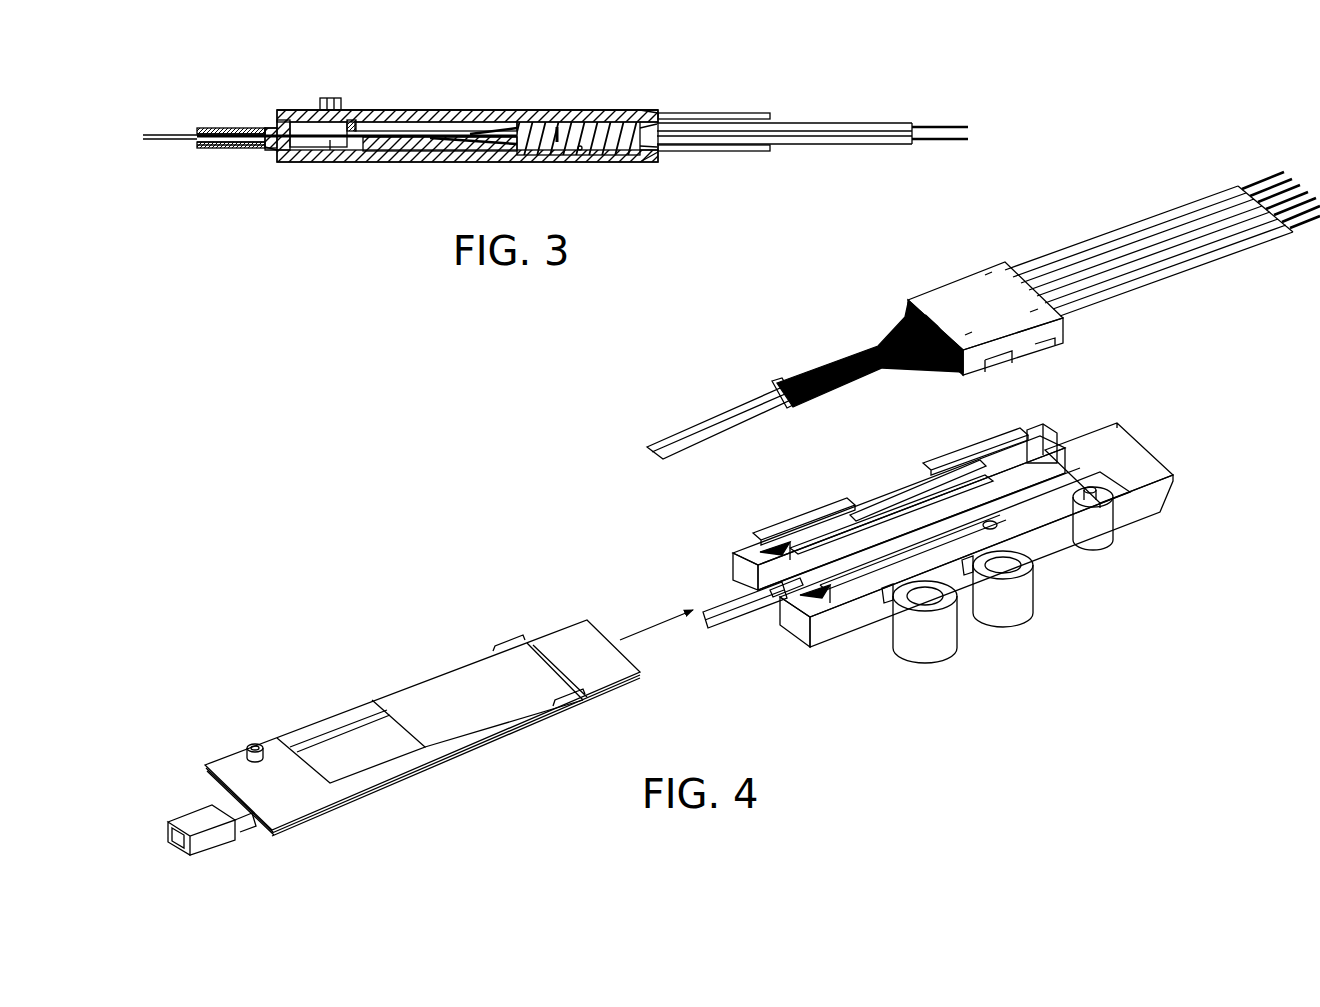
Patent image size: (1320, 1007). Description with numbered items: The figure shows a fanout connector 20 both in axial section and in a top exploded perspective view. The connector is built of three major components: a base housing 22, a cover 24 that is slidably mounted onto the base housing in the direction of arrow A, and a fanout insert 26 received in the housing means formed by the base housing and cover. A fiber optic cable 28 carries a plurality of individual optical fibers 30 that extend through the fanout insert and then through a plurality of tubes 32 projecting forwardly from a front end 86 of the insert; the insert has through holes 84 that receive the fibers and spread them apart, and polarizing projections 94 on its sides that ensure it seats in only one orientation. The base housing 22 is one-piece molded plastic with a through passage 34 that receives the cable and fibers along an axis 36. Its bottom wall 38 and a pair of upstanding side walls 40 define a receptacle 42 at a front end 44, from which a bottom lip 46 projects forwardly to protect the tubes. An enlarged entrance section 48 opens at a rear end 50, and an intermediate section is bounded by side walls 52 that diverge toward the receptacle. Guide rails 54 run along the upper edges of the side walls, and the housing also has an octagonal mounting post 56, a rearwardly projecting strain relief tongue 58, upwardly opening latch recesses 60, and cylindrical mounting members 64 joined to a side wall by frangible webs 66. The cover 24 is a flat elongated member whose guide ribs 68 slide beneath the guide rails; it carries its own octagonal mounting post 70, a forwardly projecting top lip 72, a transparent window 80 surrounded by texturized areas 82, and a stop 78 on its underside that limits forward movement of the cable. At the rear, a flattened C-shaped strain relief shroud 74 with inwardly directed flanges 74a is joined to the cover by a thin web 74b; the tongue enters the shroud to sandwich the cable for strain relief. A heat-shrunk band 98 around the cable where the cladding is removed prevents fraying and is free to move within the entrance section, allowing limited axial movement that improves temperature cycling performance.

In FIG. 3, the fanout connector 20 is at (613, 220).
In FIG. 4, the fanout connector 20 is at (565, 488).
In FIG. 3, the base housing 22 is at (660, 162).
In FIG. 4, the base housing 22 is at (870, 628).
In FIG. 3, the cover 24 is at (660, 112).
In FIG. 4, the cover 24 is at (395, 672).
In FIG. 3, the fanout insert 26 is at (556, 124).
In FIG. 4, the fanout insert 26 is at (908, 300).
In FIG. 3, the fiber optic cable 28 is at (158, 140).
In FIG. 4, the fiber optic cable 28 is at (672, 440).
In FIG. 3, the optical fibers 30 is at (500, 140).
In FIG. 4, the optical fibers 30 is at (1285, 210).
In FIG. 3, the tubes 32 is at (845, 130).
In FIG. 4, the tubes 32 is at (1118, 250).
In FIG. 3, the through passage 34 is at (505, 152).
In FIG. 4, the through passage 34 is at (905, 508).
In FIG. 4, the axis 36 is at (1138, 438).
In FIG. 4, the bottom wall 38 is at (1115, 520).
In FIG. 4, the side walls 40 is at (990, 443).
In FIG. 3, the receptacle 42 is at (568, 155).
In FIG. 4, the receptacle 42 is at (1000, 438).
In FIG. 4, the front end 44 is at (1135, 490).
In FIG. 3, the bottom lip 46 is at (760, 152).
In FIG. 4, the bottom lip 46 is at (1135, 462).
In FIG. 3, the entrance section 48 is at (345, 150).
In FIG. 4, the entrance section 48 is at (778, 600).
In FIG. 4, the rear end 50 is at (740, 575).
In FIG. 3, the side walls 52 is at (405, 125).
In FIG. 4, the side walls 52 is at (880, 505).
In FIG. 4, the guide rails 54 is at (778, 532).
In FIG. 4, the mounting post 56 is at (1118, 508).
In FIG. 3, the strain relief tongue 58 is at (258, 151).
In FIG. 4, the strain relief tongue 58 is at (715, 628).
In FIG. 4, the latch recesses 60 is at (770, 548).
In FIG. 4, the cylindrical mounting members 64 is at (1015, 594).
In FIG. 4, the frangible webs 66 is at (970, 600).
In FIG. 4, the guide ribs 68 is at (210, 768).
In FIG. 3, the mounting post 70 is at (321, 102).
In FIG. 4, the mounting post 70 is at (247, 750).
In FIG. 3, the top lip 72 is at (750, 114).
In FIG. 4, the top lip 72 is at (568, 645).
In FIG. 3, the strain relief shroud 74 is at (222, 128).
In FIG. 4, the strain relief shroud 74 is at (190, 820).
In FIG. 3, the flanges 74a is at (216, 149).
In FIG. 4, the flanges 74a is at (182, 845).
In FIG. 4, the web 74b is at (242, 826).
In FIG. 3, the stop 78 is at (352, 121).
In FIG. 4, the transparent window 80 is at (385, 712).
In FIG. 4, the texturized areas 82 is at (322, 796).
In FIG. 4, the through holes 84 is at (955, 330).
In FIG. 4, the front end 86 is at (1005, 268).
In FIG. 4, the polarizing projections 94 is at (1000, 372).
In FIG. 3, the band 98 is at (330, 152).
In FIG. 4, the band 98 is at (785, 395).
In FIG. 4, the arrow A is at (645, 630).